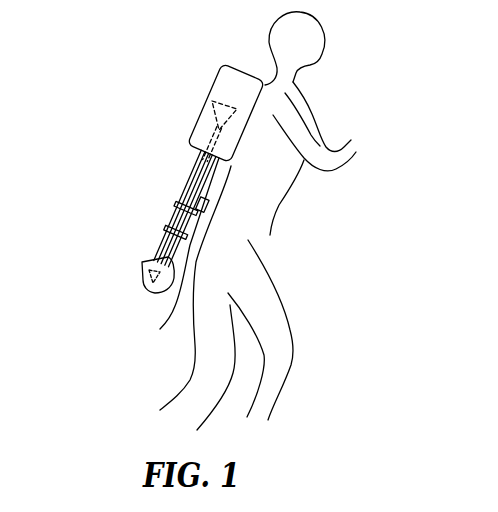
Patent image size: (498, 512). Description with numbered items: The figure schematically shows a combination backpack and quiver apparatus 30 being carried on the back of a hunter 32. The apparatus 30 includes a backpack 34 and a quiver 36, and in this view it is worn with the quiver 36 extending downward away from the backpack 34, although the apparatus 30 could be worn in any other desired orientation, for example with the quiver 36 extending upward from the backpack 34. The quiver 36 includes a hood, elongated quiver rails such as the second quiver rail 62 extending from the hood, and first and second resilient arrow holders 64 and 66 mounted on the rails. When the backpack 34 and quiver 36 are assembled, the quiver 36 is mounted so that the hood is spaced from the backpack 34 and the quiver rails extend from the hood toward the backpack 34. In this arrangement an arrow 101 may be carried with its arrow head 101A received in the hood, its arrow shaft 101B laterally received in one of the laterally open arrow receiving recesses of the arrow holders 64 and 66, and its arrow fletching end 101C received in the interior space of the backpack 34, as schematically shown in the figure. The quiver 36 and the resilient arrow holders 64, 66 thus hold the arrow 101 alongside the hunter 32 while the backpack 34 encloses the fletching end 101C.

The combination backpack and quiver apparatus 30 is at (182, 70).
The hunter 32 is at (282, 195).
The backpack 34 is at (184, 89).
The quiver 36 is at (103, 299).
The second elongated quiver rail 62 is at (184, 262).
The first resilient arrow holder 64 is at (178, 208).
The second resilient arrow holder 66 is at (168, 231).
The arrow 101 is at (127, 208).
The arrow shaft 101B is at (177, 221).
The arrow head 101A is at (146, 284).
The arrow fletching end 101C is at (210, 102).